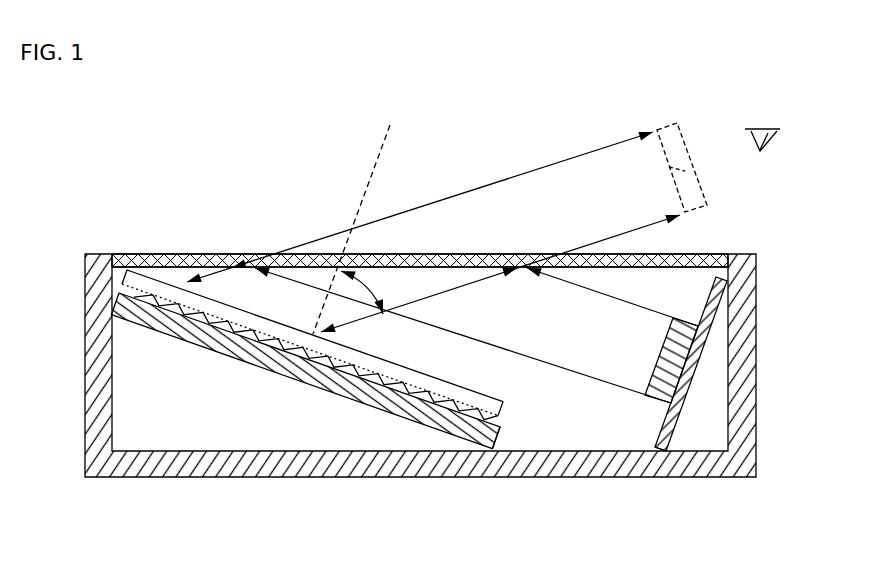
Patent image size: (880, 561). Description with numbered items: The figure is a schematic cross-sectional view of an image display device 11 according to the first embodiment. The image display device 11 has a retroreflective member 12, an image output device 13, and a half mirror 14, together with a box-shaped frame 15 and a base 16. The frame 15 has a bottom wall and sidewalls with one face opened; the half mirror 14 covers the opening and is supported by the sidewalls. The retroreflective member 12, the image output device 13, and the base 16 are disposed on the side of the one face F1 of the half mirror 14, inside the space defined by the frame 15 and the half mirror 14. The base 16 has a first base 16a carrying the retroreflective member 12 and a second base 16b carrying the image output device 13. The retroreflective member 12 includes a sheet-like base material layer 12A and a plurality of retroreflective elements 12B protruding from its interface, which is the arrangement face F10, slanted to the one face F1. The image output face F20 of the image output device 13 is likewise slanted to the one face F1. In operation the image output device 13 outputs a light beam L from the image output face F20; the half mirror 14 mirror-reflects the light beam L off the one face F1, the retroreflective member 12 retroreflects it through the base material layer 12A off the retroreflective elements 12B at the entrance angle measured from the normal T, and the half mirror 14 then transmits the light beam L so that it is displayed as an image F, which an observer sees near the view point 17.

The image display device 11 is at (223, 162).
The retroreflective member 12 is at (567, 378).
The base material layer 12A is at (498, 408).
The retroreflective elements 12B is at (490, 425).
The image output device 13 is at (683, 342).
The half mirror 14 is at (128, 255).
The frame 15 is at (85, 367).
The base 16 is at (533, 523).
The first base 16a is at (490, 436).
The second base 16b is at (655, 436).
The view point 17 is at (764, 123).
The image F is at (669, 168).
The one face of the half mirror F1 is at (672, 270).
The arrangement face F10 is at (404, 381).
The image output face F20 is at (658, 360).
The light beam L is at (612, 298).
The normal T is at (355, 216).